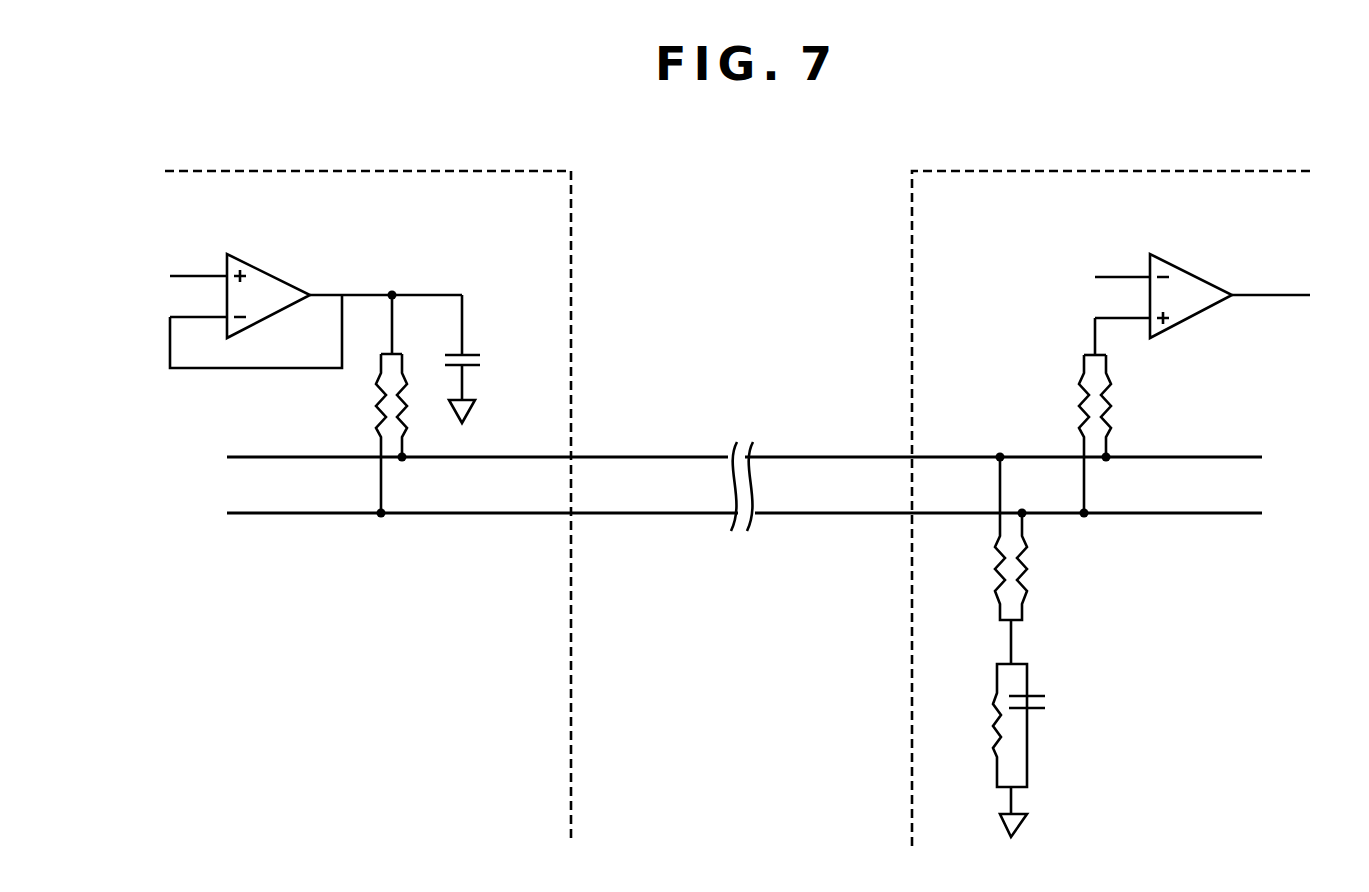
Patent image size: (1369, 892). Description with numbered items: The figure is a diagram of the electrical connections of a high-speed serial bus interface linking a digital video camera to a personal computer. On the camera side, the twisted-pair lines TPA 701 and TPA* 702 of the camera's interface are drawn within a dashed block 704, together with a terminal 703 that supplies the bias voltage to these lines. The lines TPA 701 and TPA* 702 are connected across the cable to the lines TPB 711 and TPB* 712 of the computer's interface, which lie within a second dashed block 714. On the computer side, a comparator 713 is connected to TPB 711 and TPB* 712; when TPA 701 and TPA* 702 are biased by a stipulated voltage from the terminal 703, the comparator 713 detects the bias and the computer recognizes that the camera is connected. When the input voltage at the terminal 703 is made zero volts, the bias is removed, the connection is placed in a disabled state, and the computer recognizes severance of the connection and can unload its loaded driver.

The TPA 701 is at (274, 457).
The TPA* 702 is at (274, 513).
The terminal 703 is at (197, 275).
The transmitting circuit 704 is at (365, 171).
The TPB 711 is at (1222, 457).
The TPB* 712 is at (1224, 513).
The comparator 713 is at (1195, 275).
The receiving circuit 714 is at (1114, 171).